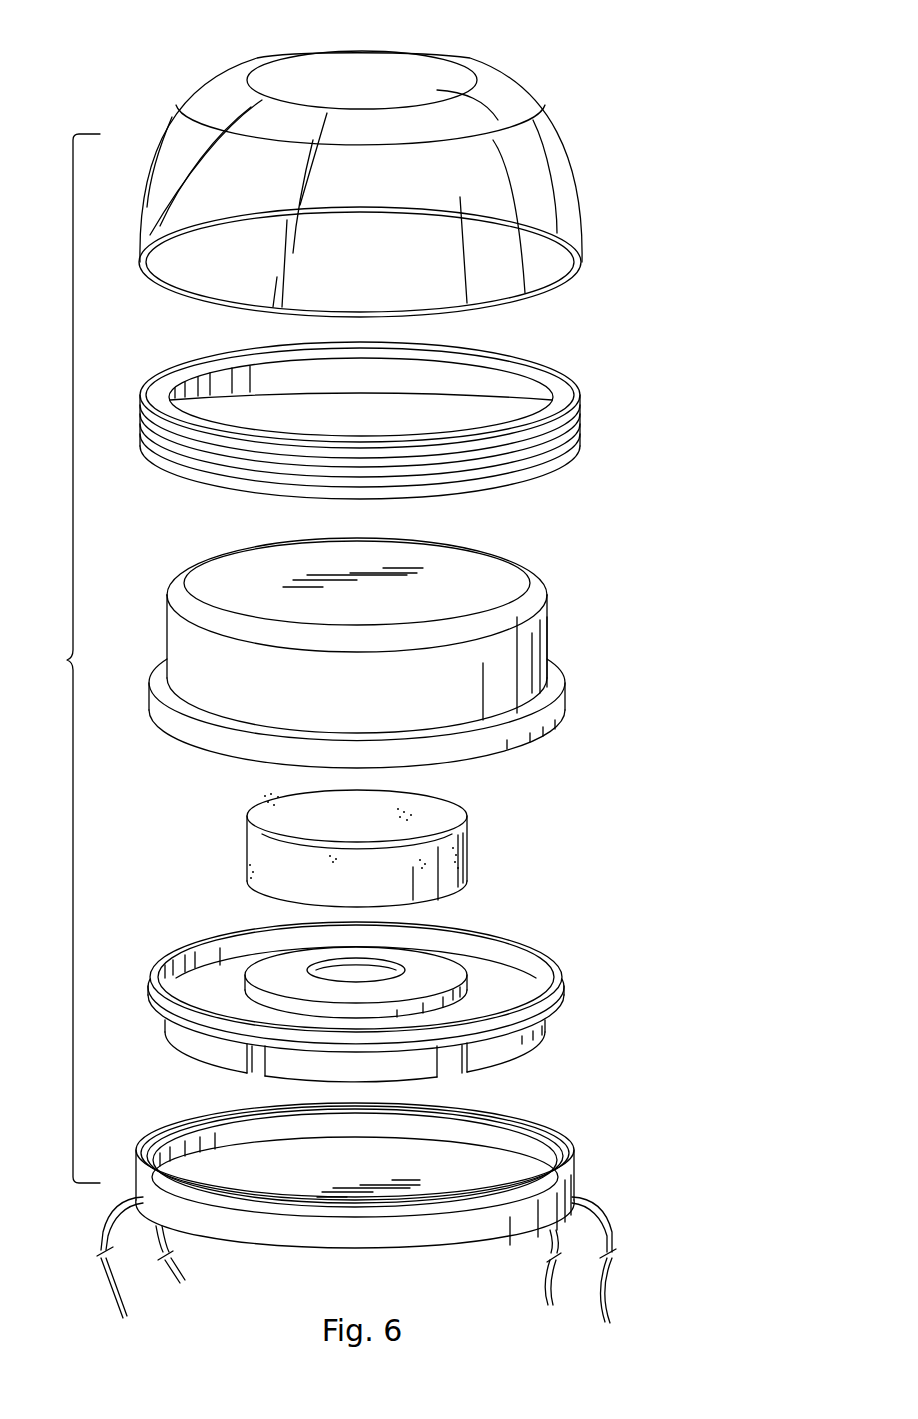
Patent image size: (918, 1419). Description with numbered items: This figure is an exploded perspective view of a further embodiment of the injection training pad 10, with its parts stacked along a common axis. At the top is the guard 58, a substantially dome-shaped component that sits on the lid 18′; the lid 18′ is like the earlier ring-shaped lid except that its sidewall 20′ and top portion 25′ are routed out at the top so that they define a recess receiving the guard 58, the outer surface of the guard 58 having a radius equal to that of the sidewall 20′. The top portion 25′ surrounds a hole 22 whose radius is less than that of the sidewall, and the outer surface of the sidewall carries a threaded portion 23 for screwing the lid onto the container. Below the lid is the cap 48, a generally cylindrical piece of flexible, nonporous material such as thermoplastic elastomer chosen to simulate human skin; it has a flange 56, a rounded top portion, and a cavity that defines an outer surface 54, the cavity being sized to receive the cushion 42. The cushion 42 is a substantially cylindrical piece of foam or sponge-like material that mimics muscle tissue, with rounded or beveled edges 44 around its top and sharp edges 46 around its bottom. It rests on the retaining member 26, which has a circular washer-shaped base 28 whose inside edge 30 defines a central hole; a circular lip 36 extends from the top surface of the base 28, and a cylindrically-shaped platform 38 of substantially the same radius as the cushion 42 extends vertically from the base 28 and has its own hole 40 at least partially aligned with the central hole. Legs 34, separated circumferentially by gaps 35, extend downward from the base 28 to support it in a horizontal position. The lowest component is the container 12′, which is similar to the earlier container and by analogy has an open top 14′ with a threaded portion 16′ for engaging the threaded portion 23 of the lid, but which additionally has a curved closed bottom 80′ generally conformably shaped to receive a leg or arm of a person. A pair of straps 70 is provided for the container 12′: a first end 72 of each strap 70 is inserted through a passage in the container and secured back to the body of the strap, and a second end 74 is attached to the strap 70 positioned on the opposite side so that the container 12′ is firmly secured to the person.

The injection training pad 10 is at (135, 98).
The guard 58 is at (510, 88).
The hole 22 is at (467, 388).
The top portion 25′ is at (563, 388).
The sidewall 20′ is at (580, 420).
The lid 18′ is at (368, 401).
The threaded portion 23 is at (140, 433).
The inside edge 30 is at (357, 653).
The cap 48 is at (548, 583).
The outer surface 54 is at (168, 645).
The flange 56 is at (150, 702).
The rounded or beveled edges 44 is at (252, 813).
The cushion 42 is at (361, 847).
The sharp edges 46 is at (250, 885).
The hole 40 is at (397, 965).
The cylindrically-shaped platform 38 is at (265, 970).
The circular lip 36 is at (555, 968).
The base 28 is at (148, 995).
The retaining member 26 is at (360, 1010).
The legs 34 is at (168, 1033).
The gaps 35 is at (255, 1070).
The base rim 14′ is at (566, 1137).
The base inner wall 16′ is at (152, 1135).
The container 12′ is at (362, 1230).
The straps 70 is at (108, 1210).
The curved closed bottom 80′ is at (370, 1247).
The first end 72 is at (180, 1282).
The second end 74 is at (122, 1320).